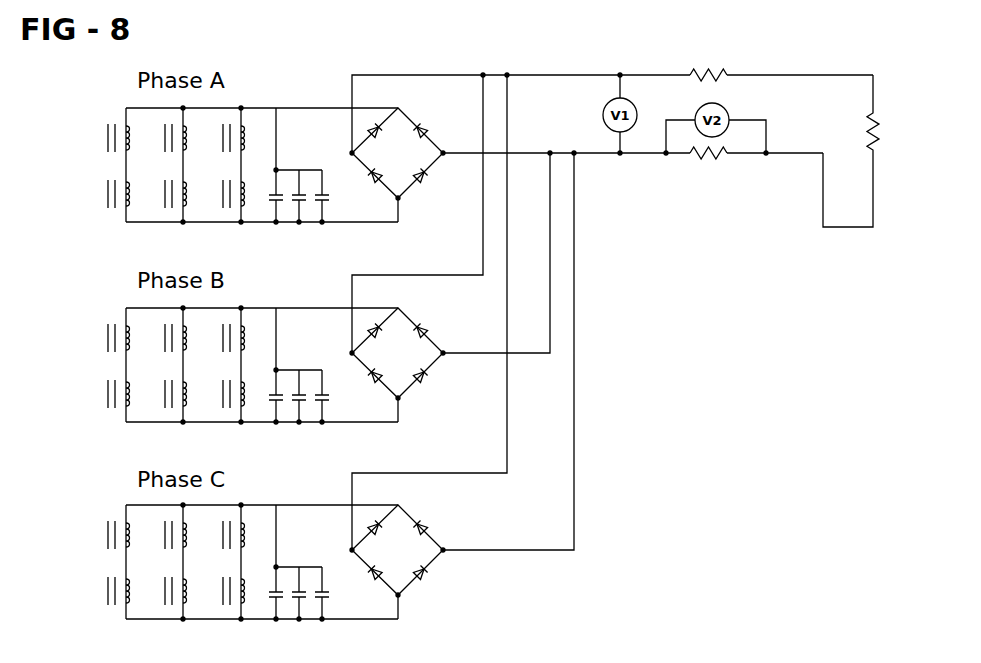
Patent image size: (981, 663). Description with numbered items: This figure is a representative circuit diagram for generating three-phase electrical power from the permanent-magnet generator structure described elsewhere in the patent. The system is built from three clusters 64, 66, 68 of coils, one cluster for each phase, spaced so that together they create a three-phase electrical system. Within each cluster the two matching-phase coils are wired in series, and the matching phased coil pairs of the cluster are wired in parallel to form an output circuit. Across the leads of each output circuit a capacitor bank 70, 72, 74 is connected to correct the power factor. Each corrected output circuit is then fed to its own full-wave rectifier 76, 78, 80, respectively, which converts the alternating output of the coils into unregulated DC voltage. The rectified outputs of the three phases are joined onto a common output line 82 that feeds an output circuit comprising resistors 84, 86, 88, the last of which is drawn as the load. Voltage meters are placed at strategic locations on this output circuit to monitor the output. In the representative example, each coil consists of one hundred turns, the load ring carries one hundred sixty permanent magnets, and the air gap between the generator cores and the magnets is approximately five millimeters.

The cluster 64 is at (125, 109).
The cluster 66 is at (125, 308).
The cluster 68 is at (125, 505).
The capacitor bank 70 is at (323, 208).
The capacitor bank 72 is at (323, 408).
The capacitor bank 74 is at (323, 605).
The full-wave rectifier 76 is at (408, 117).
The full-wave rectifier 78 is at (437, 342).
The full-wave rectifier 80 is at (437, 540).
The DC output bus 82 is at (568, 75).
The resistor 84 is at (707, 75).
The resistor 86 is at (707, 160).
The resistor 88 is at (878, 112).